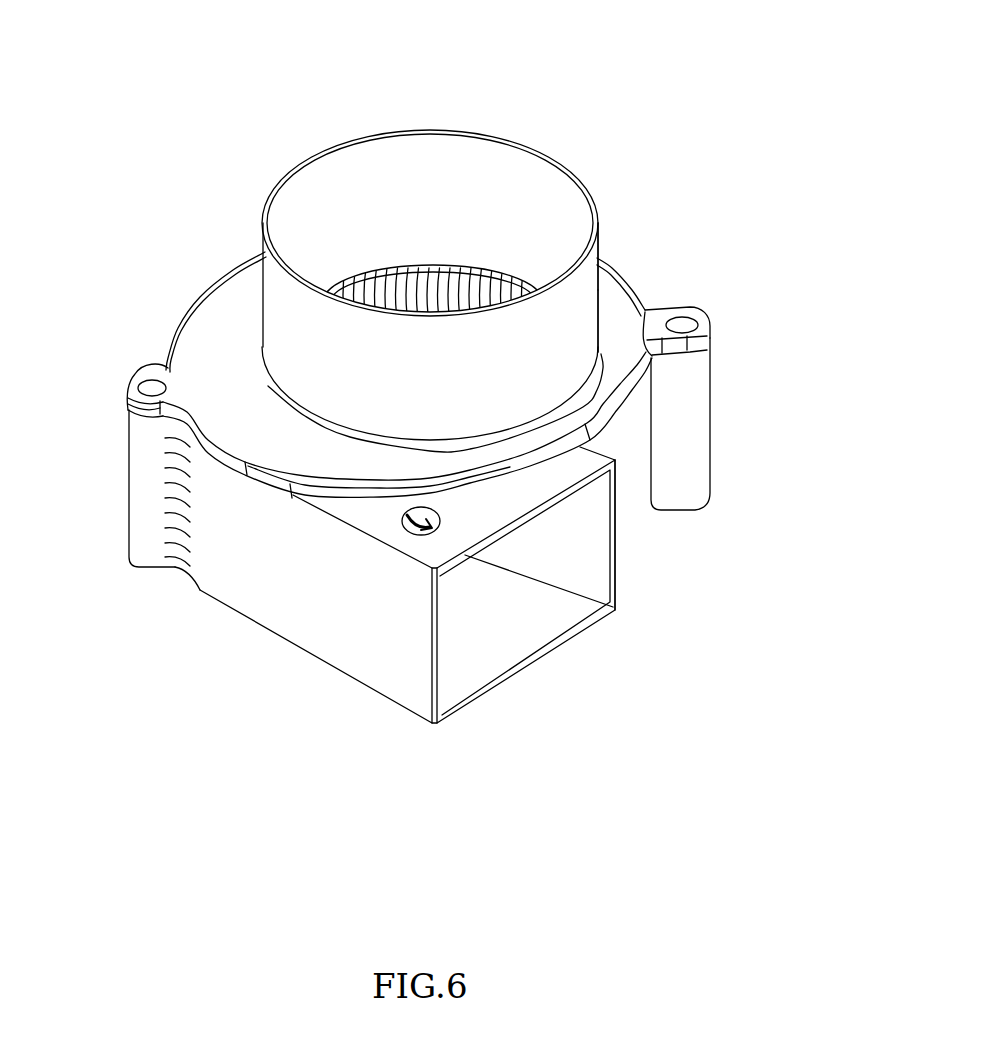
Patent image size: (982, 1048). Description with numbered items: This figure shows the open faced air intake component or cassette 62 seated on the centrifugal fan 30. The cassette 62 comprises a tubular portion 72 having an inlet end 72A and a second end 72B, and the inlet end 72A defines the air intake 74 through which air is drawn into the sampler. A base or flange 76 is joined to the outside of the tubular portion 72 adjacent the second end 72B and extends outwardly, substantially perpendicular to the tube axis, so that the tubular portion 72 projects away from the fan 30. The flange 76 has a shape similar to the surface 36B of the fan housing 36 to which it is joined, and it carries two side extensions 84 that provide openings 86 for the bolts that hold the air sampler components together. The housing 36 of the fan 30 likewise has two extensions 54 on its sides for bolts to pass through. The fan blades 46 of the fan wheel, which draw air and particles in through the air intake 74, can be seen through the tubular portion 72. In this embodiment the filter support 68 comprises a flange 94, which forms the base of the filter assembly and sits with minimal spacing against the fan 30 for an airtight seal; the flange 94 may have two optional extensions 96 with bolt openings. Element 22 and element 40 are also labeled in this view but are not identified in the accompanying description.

The blower assembly 22 is at (638, 113).
The centrifugal fan 30 is at (273, 684).
The housing 36 is at (632, 480).
The surface of the fan housing 36B is at (451, 518).
The outlet duct 40 is at (499, 596).
The fan blades 46 is at (377, 283).
The extensions 54 is at (143, 493).
The open faced air intake component 62 is at (695, 215).
The filter support 68 is at (263, 480).
The tubular portion 72 is at (288, 313).
The inlet end 72A is at (599, 205).
The second end 72B is at (600, 353).
The air intake 74 is at (489, 198).
The flange 76 is at (212, 347).
The extensions 84 is at (128, 392).
The openings 86 is at (148, 372).
The flange 94 is at (291, 497).
The extensions 96 is at (147, 417).